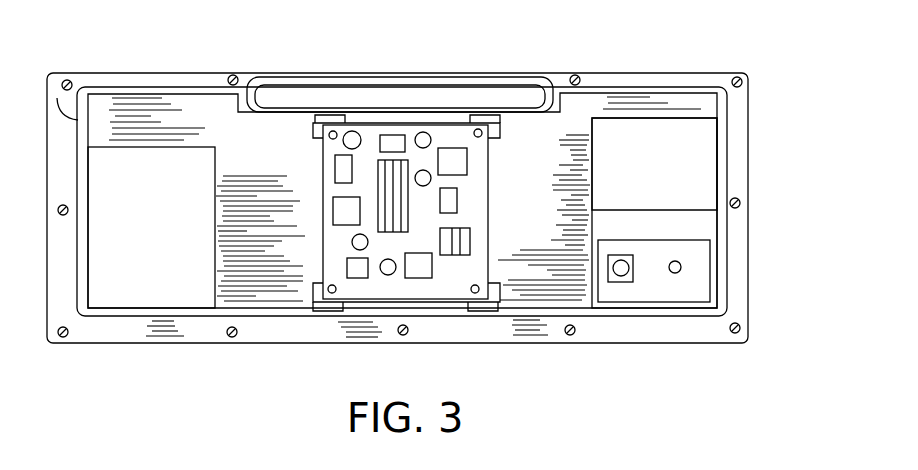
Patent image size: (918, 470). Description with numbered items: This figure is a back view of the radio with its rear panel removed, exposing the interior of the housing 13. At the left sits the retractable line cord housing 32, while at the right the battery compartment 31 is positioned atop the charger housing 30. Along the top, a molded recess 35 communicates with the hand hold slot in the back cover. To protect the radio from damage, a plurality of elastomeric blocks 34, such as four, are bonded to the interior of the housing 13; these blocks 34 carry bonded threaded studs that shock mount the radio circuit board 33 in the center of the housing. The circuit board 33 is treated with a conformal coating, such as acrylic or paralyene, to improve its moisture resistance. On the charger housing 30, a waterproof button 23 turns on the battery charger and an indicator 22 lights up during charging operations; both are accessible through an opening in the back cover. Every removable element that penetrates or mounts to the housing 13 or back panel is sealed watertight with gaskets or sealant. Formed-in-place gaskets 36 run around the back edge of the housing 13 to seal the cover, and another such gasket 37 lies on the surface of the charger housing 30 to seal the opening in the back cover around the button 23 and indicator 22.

The housing 13 is at (750, 143).
The indicator 22 is at (680, 270).
The waterproof button 23 is at (638, 273).
The charger housing 30 is at (708, 227).
The battery compartment 31 is at (705, 177).
The retractable line cord housing 32 is at (105, 177).
The radio circuit board 33 is at (450, 287).
The elastomeric blocks 34 is at (335, 120).
The molded recess 35 is at (500, 97).
The formed-in-place gaskets 36 is at (59, 74).
The gasket 37 is at (700, 262).